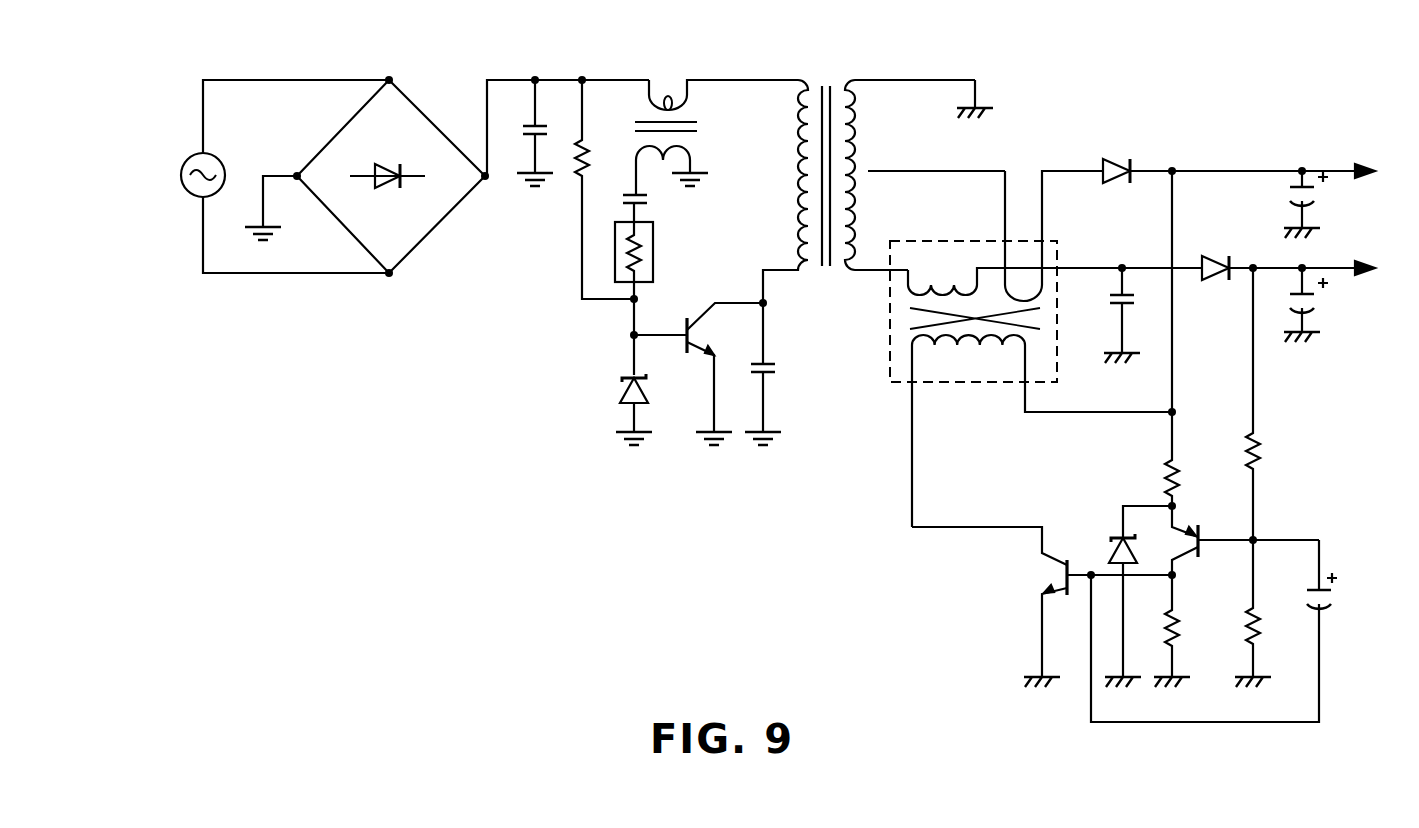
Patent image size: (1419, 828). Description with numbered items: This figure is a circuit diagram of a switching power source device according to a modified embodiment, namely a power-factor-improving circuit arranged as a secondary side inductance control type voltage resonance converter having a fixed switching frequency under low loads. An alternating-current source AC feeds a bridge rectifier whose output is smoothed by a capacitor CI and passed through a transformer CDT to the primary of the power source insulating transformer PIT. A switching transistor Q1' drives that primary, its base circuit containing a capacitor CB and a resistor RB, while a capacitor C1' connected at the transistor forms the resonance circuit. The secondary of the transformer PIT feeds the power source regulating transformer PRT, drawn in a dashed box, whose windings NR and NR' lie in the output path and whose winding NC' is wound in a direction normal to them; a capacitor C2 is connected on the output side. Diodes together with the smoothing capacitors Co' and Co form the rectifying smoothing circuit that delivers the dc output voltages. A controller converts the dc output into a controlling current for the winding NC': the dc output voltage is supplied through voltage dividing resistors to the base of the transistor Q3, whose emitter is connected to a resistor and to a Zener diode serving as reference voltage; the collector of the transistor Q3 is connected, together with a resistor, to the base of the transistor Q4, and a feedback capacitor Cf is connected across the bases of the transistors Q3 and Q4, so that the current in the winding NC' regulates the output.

The AC power source AC is at (273, 176).
The input capacitor CI is at (542, 133).
The current detecting transformer CDT is at (716, 121).
The base capacitor CB is at (655, 207).
The base resistor RB is at (653, 260).
The switching transistor Q1' is at (698, 374).
The resonance capacitor C1' is at (784, 374).
The power isolation transformer PIT is at (884, 175).
The power regulating transformer PRT is at (950, 311).
The winding NR is at (1015, 252).
The controlled winding NR' is at (1054, 236).
The winding NC' is at (1042, 431).
The capacitor C2 is at (1131, 315).
The smoothing capacitor Co' is at (1325, 204).
The smoothing capacitor Co is at (1319, 305).
The transistor Q3 is at (1236, 596).
The transistor Q4 is at (989, 607).
The feedback capacitor Cf is at (1229, 631).